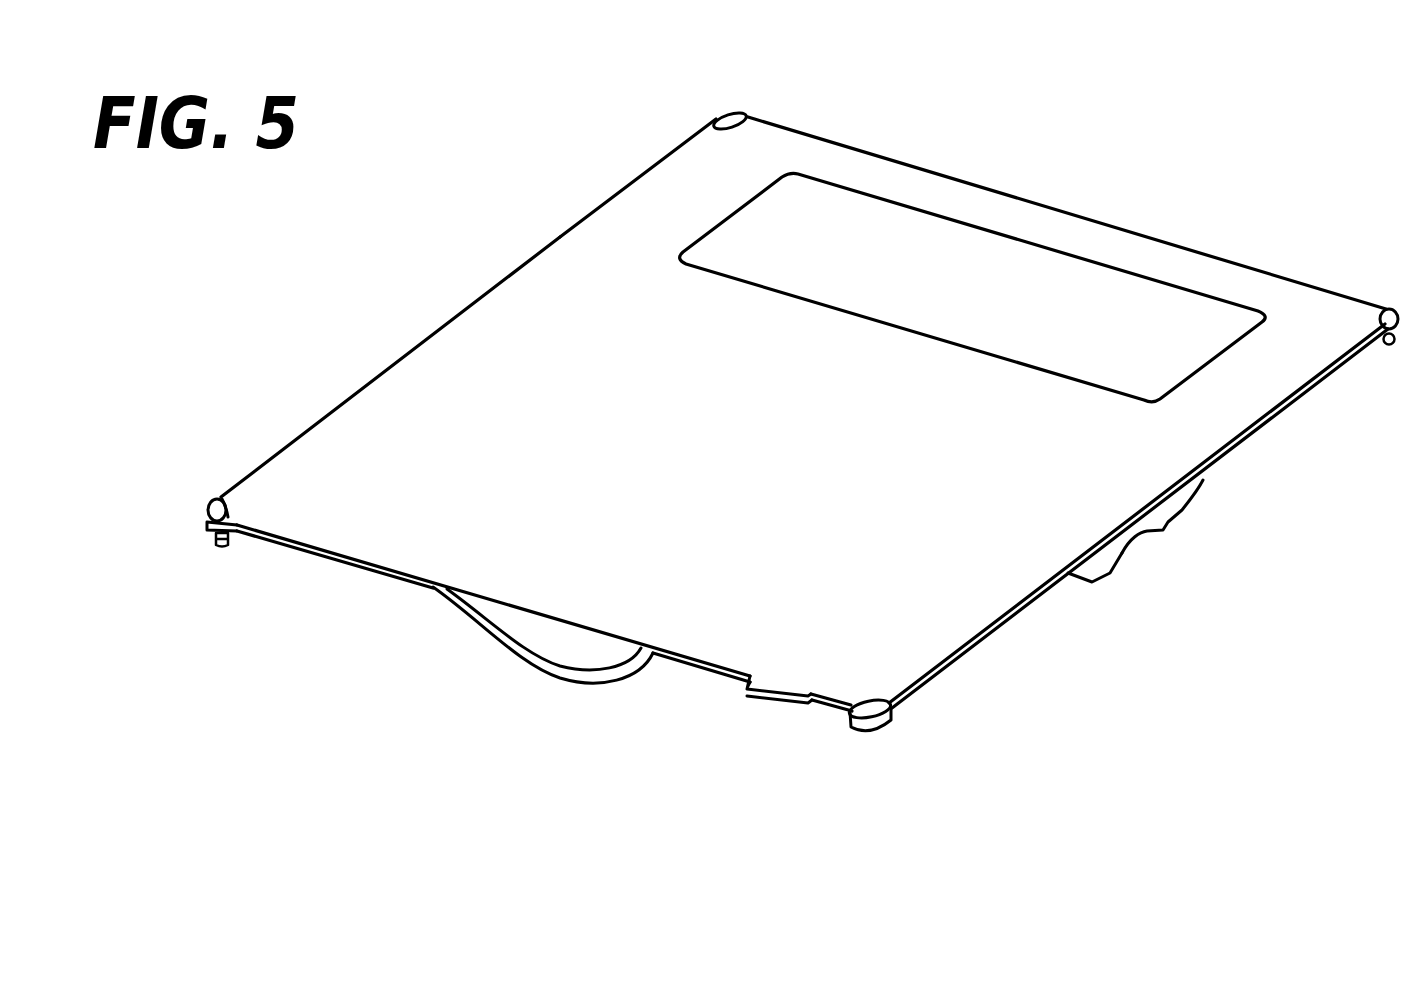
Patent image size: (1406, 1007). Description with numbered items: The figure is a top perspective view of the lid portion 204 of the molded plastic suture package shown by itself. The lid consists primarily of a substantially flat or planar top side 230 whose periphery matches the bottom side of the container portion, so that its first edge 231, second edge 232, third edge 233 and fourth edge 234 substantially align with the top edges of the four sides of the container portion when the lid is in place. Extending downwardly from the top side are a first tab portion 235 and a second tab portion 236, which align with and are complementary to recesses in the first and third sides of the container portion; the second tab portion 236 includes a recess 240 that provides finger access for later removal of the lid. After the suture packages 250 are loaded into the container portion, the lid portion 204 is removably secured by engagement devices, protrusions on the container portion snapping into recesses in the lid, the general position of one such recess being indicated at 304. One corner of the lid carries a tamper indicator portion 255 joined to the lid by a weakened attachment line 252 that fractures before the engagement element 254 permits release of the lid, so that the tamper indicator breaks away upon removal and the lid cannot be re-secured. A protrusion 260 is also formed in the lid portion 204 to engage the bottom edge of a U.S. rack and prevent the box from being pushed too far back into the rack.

The lid portion 204 is at (744, 521).
The top side 230 is at (515, 352).
The first edge 231 is at (407, 585).
The second edge 232 is at (1020, 195).
The third edge 233 is at (1037, 598).
The fourth edge 234 is at (574, 227).
The first tab portion 235 is at (546, 654).
The second tab portion 236 is at (1170, 509).
The recess 240 is at (1125, 556).
The suture packages 250 is at (208, 500).
The weakened attachment line 252 is at (228, 504).
The engagement element 254 is at (221, 548).
The tamper indicator portion 255 is at (200, 532).
The protrusion 260 is at (765, 700).
The recess position 304 is at (882, 730).